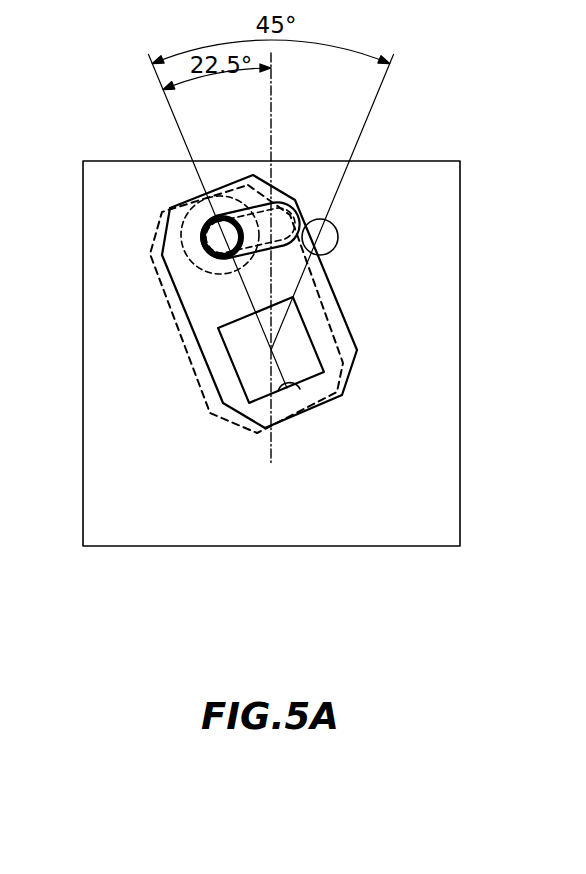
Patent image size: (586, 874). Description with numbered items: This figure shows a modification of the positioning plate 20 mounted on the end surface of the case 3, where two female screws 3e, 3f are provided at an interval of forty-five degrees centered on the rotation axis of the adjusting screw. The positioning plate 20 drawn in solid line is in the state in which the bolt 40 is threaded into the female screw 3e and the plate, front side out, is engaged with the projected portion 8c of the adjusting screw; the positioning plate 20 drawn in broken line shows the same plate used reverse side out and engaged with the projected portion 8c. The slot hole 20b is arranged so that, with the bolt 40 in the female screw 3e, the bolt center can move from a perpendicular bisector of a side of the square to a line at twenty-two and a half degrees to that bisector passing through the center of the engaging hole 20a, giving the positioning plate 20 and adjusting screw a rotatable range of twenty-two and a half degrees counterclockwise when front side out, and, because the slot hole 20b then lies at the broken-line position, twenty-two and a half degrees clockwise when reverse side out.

The case 3 is at (462, 463).
The female screw 3e is at (221, 214).
The female screw 3f is at (319, 218).
The projected portion 8c is at (250, 378).
The positioning plate 20 is at (168, 318).
The engaging hole 20a is at (283, 395).
The slot hole 20b is at (165, 263).
The bolt 40 is at (165, 213).